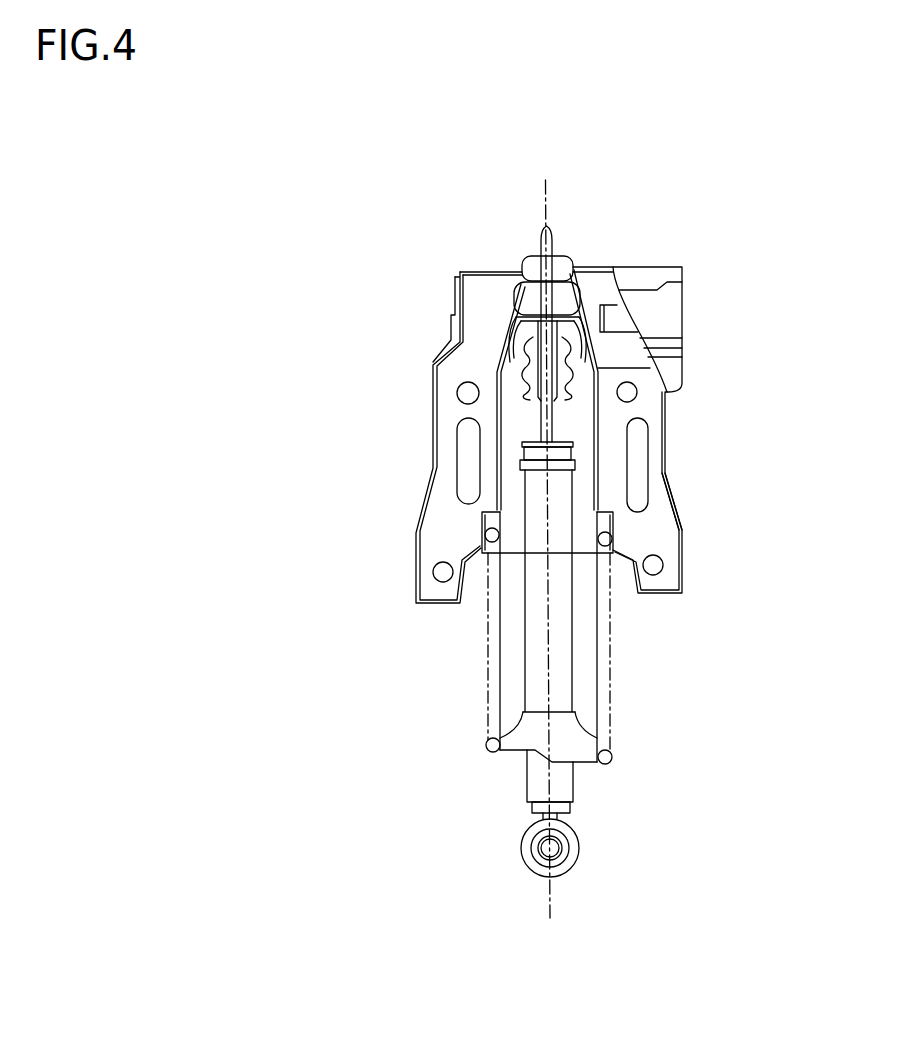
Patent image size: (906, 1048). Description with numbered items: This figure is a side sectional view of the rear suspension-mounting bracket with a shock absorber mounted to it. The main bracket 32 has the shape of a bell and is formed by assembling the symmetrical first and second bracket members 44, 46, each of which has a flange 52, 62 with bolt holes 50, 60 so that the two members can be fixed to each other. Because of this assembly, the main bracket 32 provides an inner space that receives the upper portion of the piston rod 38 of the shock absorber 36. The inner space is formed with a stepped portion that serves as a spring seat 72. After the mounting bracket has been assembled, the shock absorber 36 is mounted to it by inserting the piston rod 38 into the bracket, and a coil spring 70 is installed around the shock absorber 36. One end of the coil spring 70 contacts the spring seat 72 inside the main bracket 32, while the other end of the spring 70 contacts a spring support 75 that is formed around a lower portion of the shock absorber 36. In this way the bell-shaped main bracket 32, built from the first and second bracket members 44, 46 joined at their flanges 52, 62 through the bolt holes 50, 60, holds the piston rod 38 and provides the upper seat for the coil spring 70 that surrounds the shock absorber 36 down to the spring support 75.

The main bracket 32 is at (668, 284).
The first bracket member 44 is at (668, 284).
The second bracket member 46 is at (614, 263).
The shock absorber 36 is at (522, 625).
The piston rod 38 is at (541, 403).
The bolt hole 50 is at (607, 435).
The bolt hole 60 is at (657, 567).
The flange 52 is at (730, 501).
The flange 62 is at (663, 519).
The coil spring 70 is at (488, 741).
The spring seat 72 is at (480, 513).
The spring support 75 is at (582, 758).